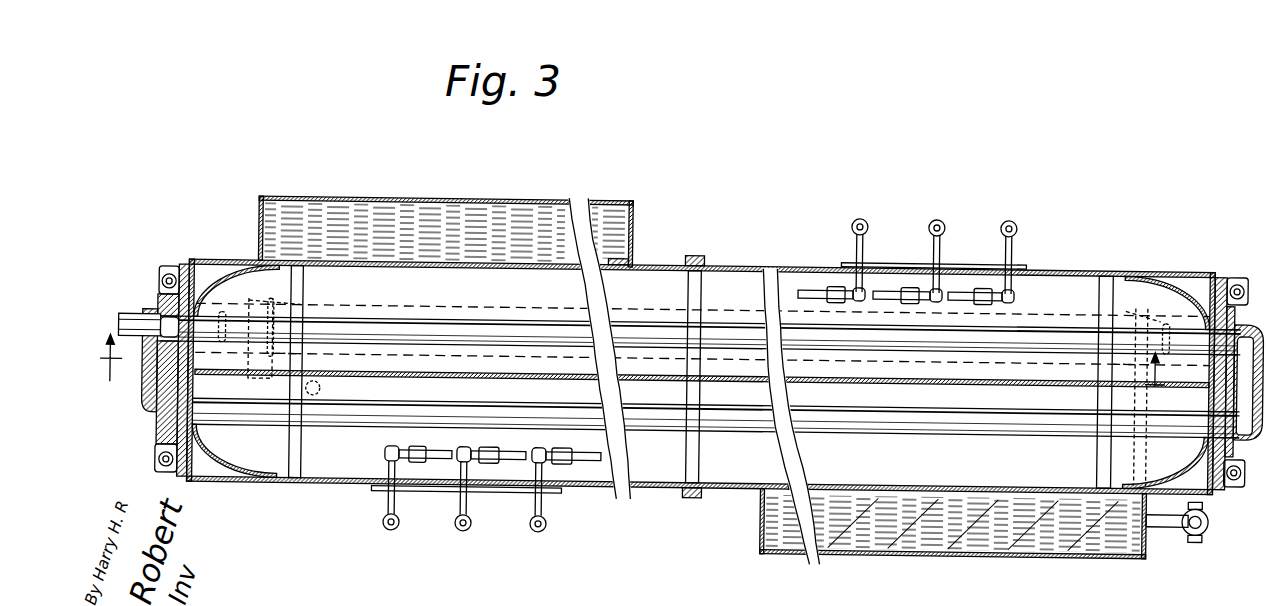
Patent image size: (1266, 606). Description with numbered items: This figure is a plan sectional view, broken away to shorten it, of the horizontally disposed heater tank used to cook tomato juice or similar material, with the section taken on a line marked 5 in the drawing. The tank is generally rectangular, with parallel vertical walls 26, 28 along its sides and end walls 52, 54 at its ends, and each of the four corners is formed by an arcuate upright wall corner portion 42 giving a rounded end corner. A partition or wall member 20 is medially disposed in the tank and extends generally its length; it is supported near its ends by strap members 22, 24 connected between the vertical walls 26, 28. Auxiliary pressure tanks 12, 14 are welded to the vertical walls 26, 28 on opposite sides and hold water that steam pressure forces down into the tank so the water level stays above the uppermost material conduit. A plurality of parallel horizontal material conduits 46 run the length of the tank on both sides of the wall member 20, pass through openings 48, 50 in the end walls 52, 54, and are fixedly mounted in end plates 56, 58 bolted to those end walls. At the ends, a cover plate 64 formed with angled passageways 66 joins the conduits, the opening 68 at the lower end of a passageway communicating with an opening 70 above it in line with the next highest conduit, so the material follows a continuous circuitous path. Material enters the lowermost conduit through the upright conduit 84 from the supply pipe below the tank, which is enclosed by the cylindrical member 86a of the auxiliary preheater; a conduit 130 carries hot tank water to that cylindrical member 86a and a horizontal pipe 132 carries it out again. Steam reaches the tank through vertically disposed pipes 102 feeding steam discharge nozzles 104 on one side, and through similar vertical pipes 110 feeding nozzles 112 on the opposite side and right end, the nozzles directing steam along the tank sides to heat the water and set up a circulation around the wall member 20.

The section line 5- 5 is at (623, 364).
The auxiliary pressure tank 12 is at (413, 199).
The auxiliary pressure tank 14 is at (912, 549).
The partition or wall member 20 is at (452, 377).
The strap member 22 is at (305, 356).
The strap member 24 is at (1098, 390).
The vertical wall 26 is at (932, 478).
The vertical wall 28 is at (722, 265).
The upright wall corner portion 42 is at (223, 275).
The material conduit 46 is at (638, 320).
The opening 48 is at (1208, 455).
The opening 50 is at (198, 317).
The end wall 52 is at (183, 265).
The end wall 54 is at (1213, 275).
The end plate 56 is at (183, 479).
The end plate 58 is at (1222, 492).
The cover plate 64 is at (160, 420).
The passageway 66 is at (152, 380).
The opening 68 is at (1228, 332).
The opening 70 is at (1238, 420).
The conduit 84 is at (130, 315).
The cylindrical member 86a is at (845, 376).
The vertically disposed pipe 102 is at (393, 530).
The steam discharge nozzle 104 is at (558, 444).
The vertically disposed pipe 110 is at (927, 220).
The steam discharge nozzle 112 is at (832, 283).
The conduit 130 is at (247, 375).
The horizontal pipe 132 is at (1133, 482).